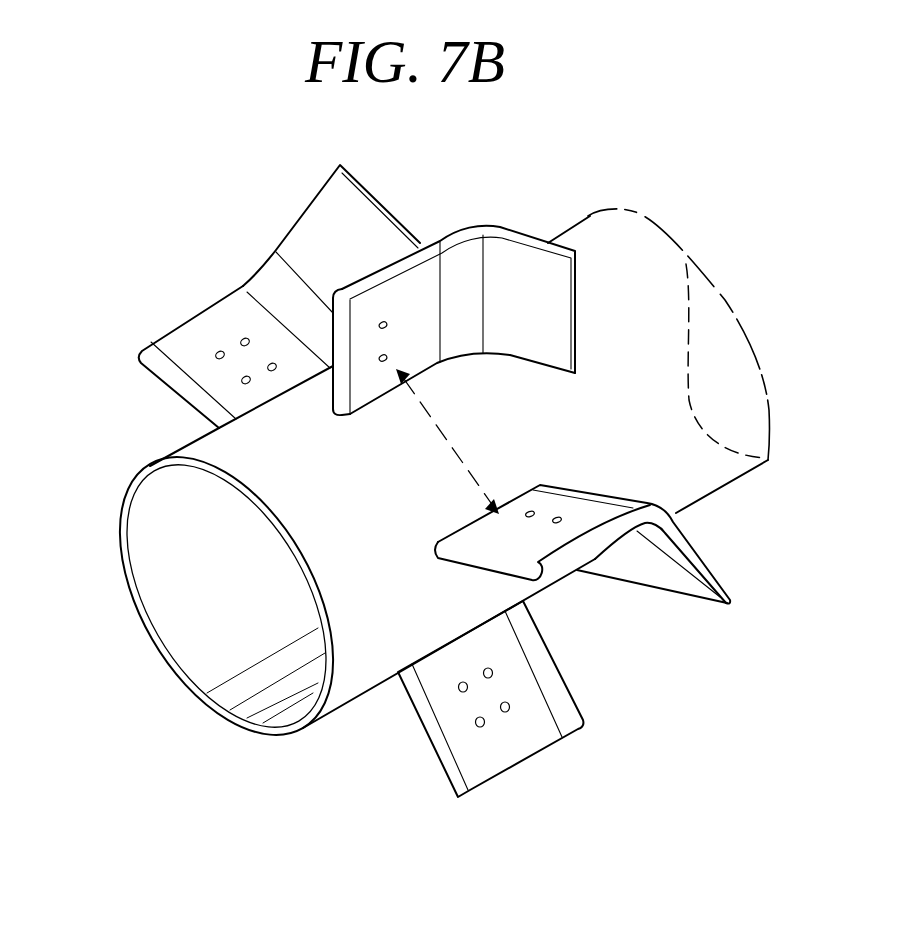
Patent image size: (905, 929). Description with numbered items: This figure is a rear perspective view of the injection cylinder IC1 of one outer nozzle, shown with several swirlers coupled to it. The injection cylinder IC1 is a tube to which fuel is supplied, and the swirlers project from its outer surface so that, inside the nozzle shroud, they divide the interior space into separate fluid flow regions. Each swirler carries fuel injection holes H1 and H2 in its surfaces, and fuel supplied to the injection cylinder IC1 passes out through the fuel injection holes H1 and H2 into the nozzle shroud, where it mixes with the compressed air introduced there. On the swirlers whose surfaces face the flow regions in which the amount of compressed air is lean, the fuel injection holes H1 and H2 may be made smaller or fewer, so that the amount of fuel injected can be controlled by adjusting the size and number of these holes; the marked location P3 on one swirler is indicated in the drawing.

The injection cylinder IC1 is at (232, 598).
The fuel injection hole H2 is at (387, 320).
The fuel injection hole H1 is at (557, 520).
The third attachment position/direction P3 is at (447, 441).